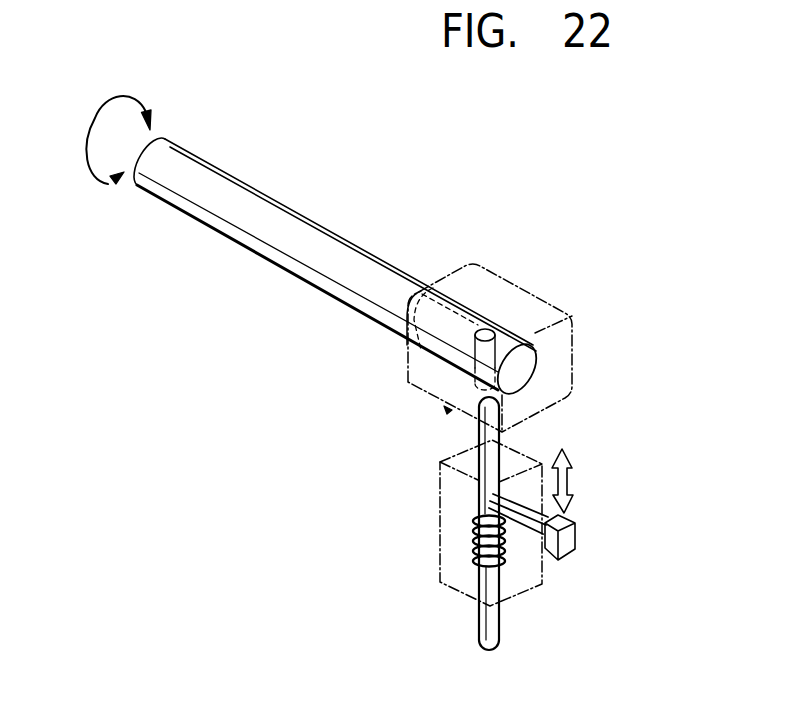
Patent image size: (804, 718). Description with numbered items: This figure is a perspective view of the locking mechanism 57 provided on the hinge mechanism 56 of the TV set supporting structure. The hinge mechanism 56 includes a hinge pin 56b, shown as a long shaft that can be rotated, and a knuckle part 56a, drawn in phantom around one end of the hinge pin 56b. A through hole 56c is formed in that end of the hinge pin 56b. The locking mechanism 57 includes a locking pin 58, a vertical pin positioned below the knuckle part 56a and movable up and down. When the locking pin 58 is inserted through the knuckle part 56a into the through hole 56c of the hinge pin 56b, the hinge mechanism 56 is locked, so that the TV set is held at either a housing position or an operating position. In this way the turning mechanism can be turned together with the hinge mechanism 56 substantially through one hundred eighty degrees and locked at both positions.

The hinge mechanism 56 is at (384, 243).
The knuckle part 56a is at (573, 360).
The hinge pin 56b is at (243, 188).
The through hole 56c is at (490, 326).
The locking mechanism 57 is at (428, 521).
The locking pin 58 is at (478, 422).